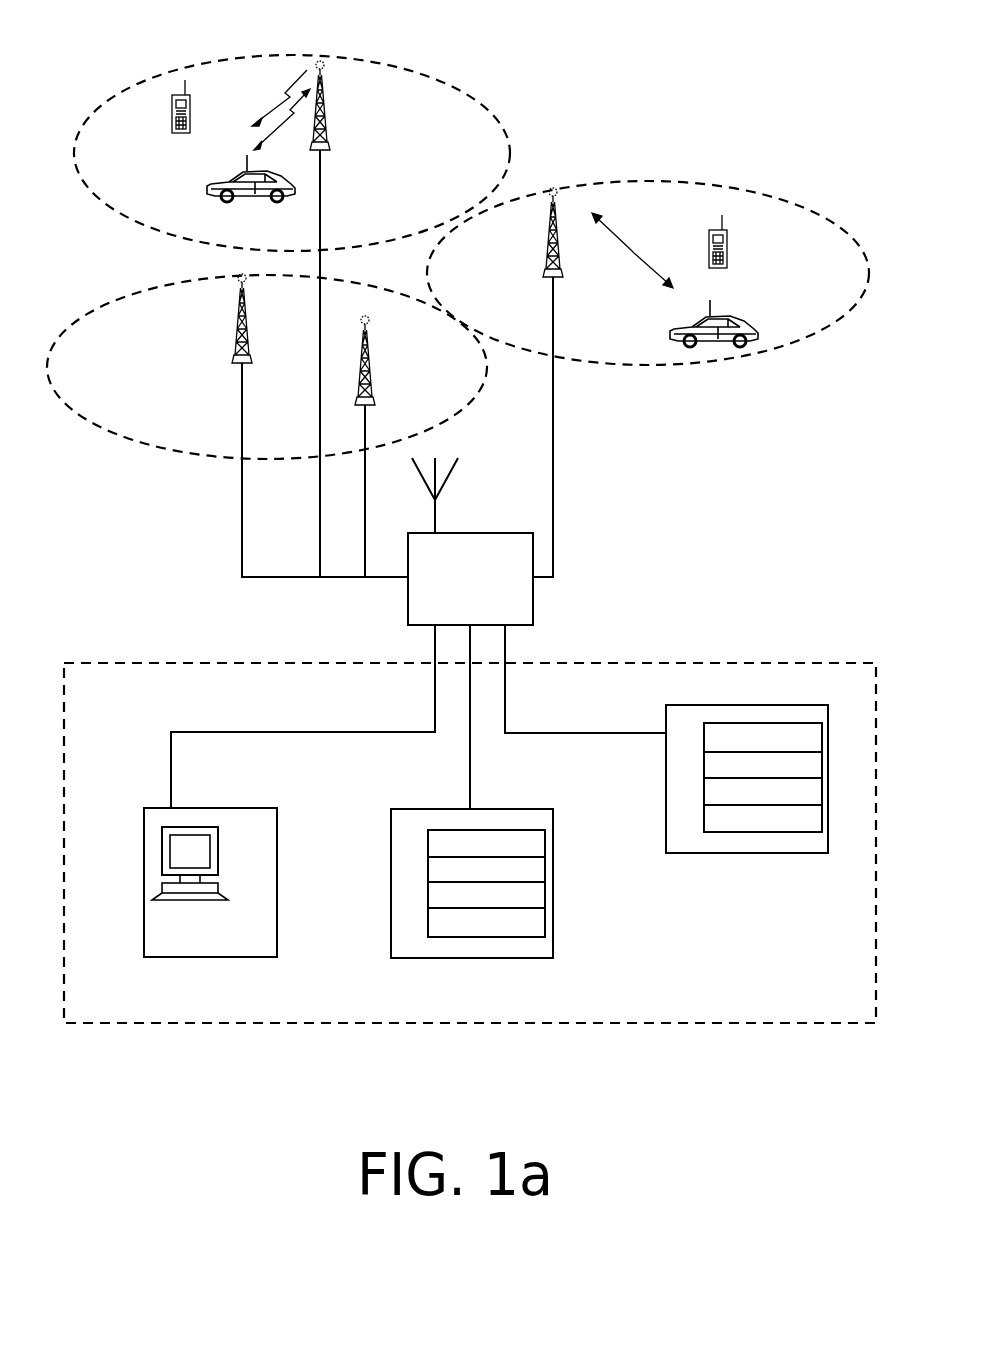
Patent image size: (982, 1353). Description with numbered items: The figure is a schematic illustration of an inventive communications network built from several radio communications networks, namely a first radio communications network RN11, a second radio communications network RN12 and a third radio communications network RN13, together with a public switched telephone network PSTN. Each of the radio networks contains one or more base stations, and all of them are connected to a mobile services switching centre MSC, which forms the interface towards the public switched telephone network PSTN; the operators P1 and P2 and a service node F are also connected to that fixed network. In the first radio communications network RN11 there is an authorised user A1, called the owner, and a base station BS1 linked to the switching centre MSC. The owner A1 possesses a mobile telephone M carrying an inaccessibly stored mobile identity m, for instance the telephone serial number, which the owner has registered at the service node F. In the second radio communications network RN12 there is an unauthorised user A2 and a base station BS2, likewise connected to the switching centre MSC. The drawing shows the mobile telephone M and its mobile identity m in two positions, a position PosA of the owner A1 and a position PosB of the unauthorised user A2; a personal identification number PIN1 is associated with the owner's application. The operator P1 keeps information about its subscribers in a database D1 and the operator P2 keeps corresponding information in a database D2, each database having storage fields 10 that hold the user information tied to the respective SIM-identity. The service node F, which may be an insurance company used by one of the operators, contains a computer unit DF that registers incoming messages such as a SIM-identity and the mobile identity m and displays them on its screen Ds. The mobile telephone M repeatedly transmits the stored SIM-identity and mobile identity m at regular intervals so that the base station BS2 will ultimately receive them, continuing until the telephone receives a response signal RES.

The mobile telephone M is at (182, 93).
The mobile identity m is at (172, 118).
The personal identification number PIN1 is at (190, 122).
The position of the owner PosA is at (716, 282).
The position of the unauthorised user PosB is at (178, 152).
The response signal RES is at (269, 108).
The base station BS1 is at (543, 270).
The base station BS2 is at (333, 150).
The authorised user A1 is at (757, 325).
The unauthorised user A2 is at (207, 190).
The first radio communications network RN11 is at (847, 310).
The second radio communications network RN12 is at (77, 171).
The third radio communications network RN13 is at (140, 294).
The mobile services switching centre MSC is at (470, 541).
The public switched telephone network PSTN is at (746, 1023).
The service node F is at (197, 846).
The screen Ds is at (220, 847).
The computer unit DF is at (220, 885).
The database D1 is at (476, 883).
The operator P1 is at (476, 847).
The storage field 10 is at (514, 851).
The database D2 is at (704, 784).
The operator P2 is at (730, 816).